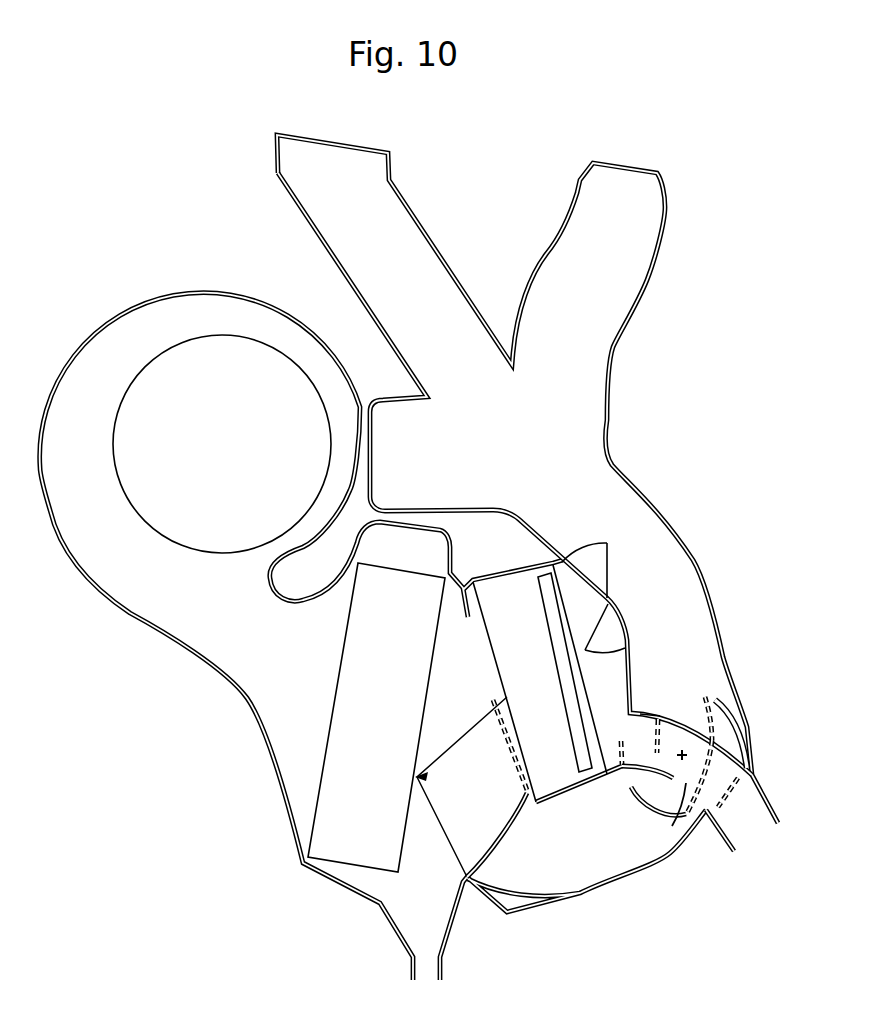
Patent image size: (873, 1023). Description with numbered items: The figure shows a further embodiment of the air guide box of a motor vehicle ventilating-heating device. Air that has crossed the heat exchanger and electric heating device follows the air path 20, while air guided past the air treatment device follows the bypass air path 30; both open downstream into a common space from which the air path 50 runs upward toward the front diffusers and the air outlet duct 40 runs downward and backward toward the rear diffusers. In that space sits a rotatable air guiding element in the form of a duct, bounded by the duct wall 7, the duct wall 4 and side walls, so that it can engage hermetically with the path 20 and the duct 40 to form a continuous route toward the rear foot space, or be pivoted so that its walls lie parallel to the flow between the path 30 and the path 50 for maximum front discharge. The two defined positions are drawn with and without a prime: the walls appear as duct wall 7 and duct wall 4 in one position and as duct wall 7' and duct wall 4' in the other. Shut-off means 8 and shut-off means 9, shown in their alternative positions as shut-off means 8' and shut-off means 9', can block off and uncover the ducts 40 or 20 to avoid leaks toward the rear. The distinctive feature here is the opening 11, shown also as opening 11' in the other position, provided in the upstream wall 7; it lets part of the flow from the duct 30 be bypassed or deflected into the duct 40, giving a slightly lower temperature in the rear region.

The duct wall 4 is at (727, 703).
The duct wall in second position 4' is at (734, 776).
The duct wall 7 is at (656, 690).
The duct wall in second position 7' is at (645, 742).
The shut-off means 8 is at (735, 805).
The shut-off means in second position 8' is at (745, 731).
The shut-off means 9 is at (618, 731).
The shut-off means in second position 9' is at (658, 818).
The opening 11 is at (631, 788).
The opening in second position 11' is at (674, 817).
The air path across the air treatment device 20 is at (610, 683).
The bypass air path 30 is at (567, 857).
The air outlet duct 40 is at (775, 865).
The air path toward front diffusers 50 is at (668, 607).